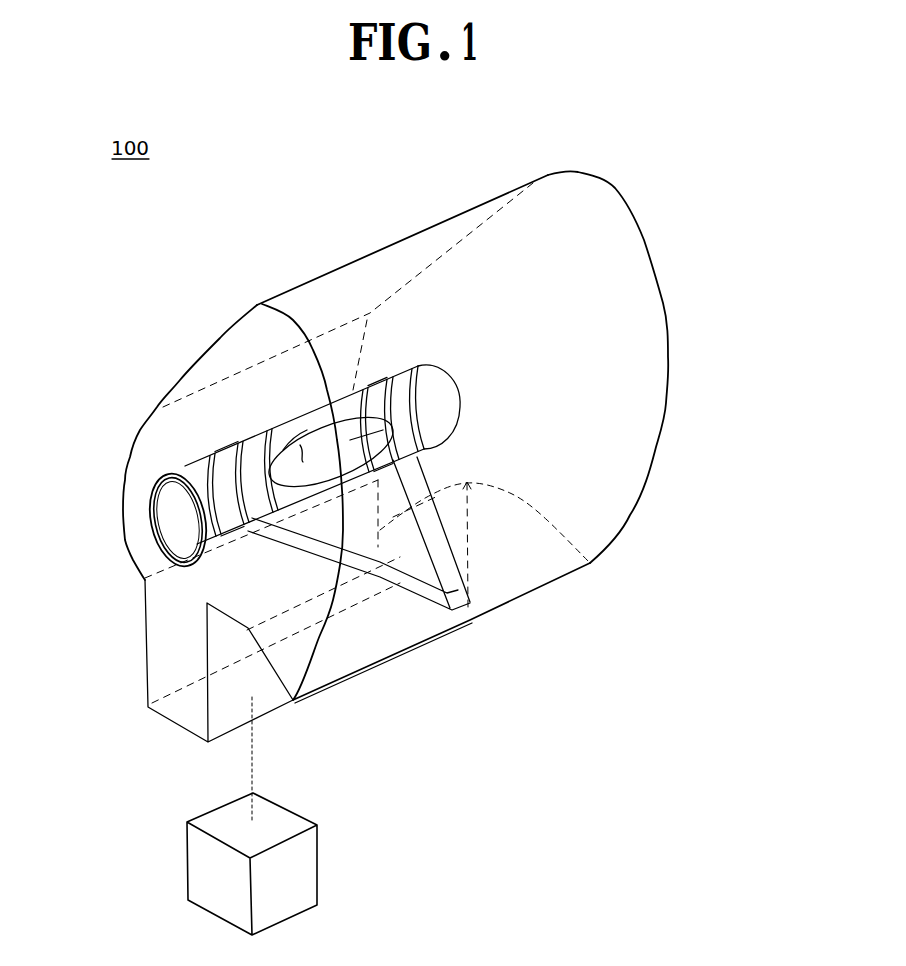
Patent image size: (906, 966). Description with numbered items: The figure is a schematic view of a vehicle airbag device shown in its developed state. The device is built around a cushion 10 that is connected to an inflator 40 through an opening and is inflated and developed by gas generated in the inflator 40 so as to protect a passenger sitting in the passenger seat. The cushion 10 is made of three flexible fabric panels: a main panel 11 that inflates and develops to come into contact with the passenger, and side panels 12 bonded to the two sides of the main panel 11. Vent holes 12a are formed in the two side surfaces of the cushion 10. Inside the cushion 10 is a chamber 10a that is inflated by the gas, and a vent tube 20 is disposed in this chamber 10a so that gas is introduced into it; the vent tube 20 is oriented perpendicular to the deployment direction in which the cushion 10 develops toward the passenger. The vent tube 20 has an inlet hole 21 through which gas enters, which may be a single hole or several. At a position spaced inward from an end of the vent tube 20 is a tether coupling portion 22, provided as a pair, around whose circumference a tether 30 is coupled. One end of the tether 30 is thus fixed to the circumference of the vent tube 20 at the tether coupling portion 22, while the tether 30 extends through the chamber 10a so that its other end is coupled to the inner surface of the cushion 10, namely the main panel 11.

The cushion 10 is at (418, 456).
The chamber 10a is at (403, 264).
The main panel 11 is at (632, 383).
The side panel 12 is at (157, 445).
The vent hole 12a is at (150, 507).
The vent tube 20 is at (251, 456).
The inlet hole 21 is at (177, 519).
The tether coupling portion 22 is at (238, 443).
The tether 30 is at (456, 578).
The inflator 40 is at (303, 867).